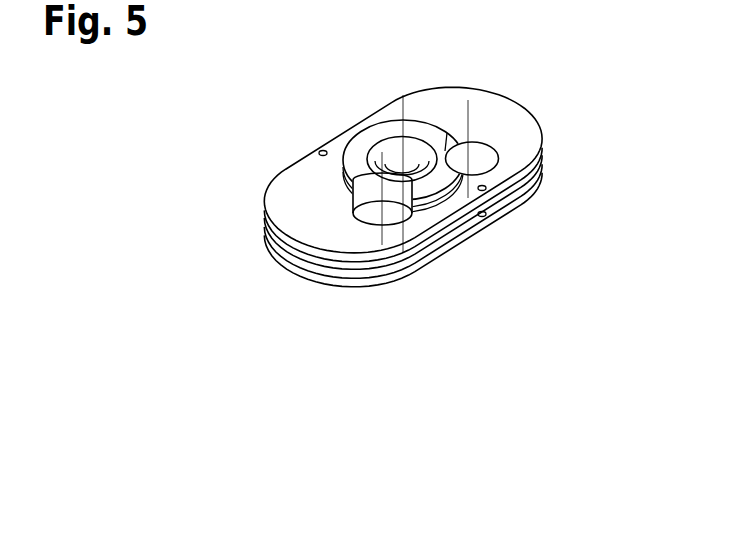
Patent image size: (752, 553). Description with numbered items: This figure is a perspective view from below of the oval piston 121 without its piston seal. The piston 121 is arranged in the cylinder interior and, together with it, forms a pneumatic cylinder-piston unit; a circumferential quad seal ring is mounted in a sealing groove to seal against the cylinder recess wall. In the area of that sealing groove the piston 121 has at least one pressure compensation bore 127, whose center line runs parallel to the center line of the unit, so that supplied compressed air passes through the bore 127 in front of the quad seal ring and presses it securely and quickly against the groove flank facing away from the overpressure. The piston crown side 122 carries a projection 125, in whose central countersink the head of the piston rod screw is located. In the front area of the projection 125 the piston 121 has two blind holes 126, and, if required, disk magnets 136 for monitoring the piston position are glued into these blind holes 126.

The piston 121 is at (302, 148).
The piston crown side 122 is at (442, 112).
The projection 125 is at (422, 180).
The blind hole 126 is at (374, 217).
The pressure compensation bore 127 is at (483, 214).
The disk magnet 136 is at (488, 162).